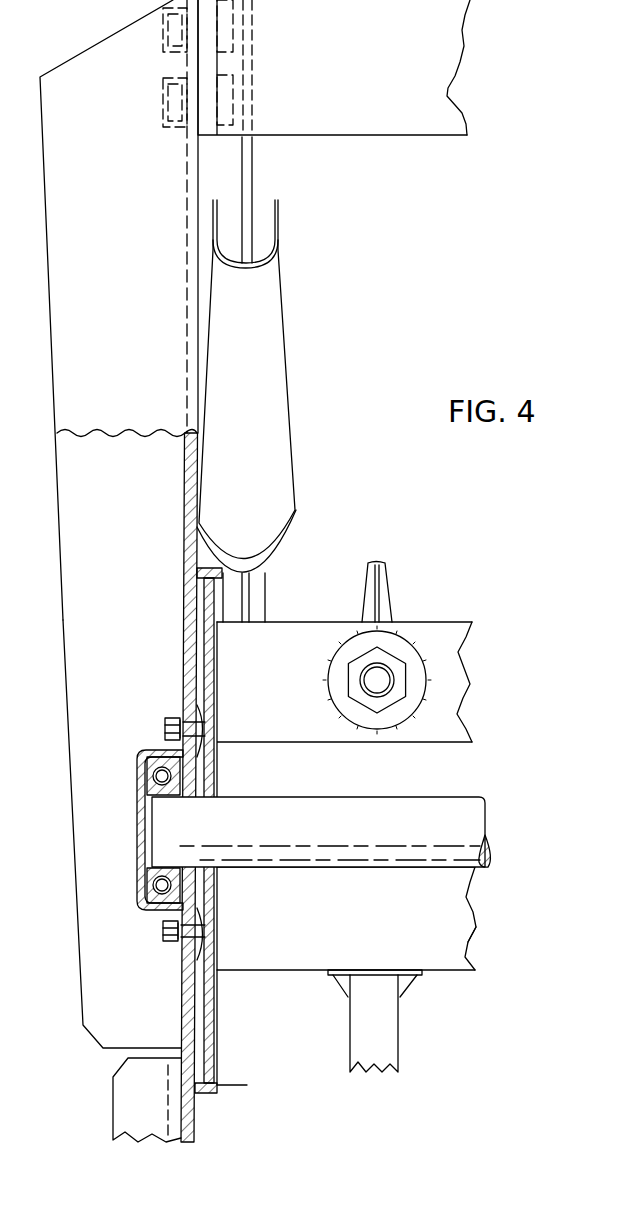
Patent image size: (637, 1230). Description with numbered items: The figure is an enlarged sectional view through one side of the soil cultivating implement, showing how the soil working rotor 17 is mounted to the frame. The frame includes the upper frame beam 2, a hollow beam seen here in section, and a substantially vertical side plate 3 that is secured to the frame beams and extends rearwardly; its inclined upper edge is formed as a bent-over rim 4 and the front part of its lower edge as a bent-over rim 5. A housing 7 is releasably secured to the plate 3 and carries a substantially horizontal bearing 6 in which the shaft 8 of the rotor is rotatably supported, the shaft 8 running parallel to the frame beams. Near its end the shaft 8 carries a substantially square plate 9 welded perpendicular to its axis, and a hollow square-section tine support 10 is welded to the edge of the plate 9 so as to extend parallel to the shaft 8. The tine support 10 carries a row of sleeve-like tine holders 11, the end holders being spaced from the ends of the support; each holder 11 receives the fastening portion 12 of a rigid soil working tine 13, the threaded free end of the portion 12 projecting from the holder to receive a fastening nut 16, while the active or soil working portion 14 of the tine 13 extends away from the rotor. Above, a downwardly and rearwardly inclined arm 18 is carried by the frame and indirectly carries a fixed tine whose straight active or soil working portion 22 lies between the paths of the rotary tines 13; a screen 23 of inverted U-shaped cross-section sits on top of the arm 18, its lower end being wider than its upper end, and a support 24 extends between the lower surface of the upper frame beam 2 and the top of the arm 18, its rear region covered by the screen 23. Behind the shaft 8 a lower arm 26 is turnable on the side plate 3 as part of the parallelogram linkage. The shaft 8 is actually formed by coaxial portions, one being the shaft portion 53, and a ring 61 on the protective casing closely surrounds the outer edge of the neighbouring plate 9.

The upper frame beam 2 is at (435, 101).
The plate 3 is at (184, 472).
The bent-over rim 4 is at (71, 61).
The bent-over rim 5 is at (90, 943).
The bearing 6 is at (147, 762).
The housing 7 is at (138, 805).
The shaft 8 is at (436, 801).
The plate 9 is at (212, 1018).
The tine support 10 is at (453, 673).
The tine holder 11 is at (280, 550).
The fastening portion 12 is at (370, 673).
The soil working tine 13 is at (363, 1023).
The active or soil working portion 14 is at (362, 590).
The fastening nut 16 is at (357, 692).
The soil working rotor 17 is at (481, 897).
The arm 18 is at (267, 160).
The active or soil working portion 22 is at (253, 623).
The screen 23 is at (270, 382).
The support 24 is at (248, 197).
The lower arm 26 is at (125, 1090).
The shaft portion 53 is at (472, 832).
The ring 61 is at (247, 1088).